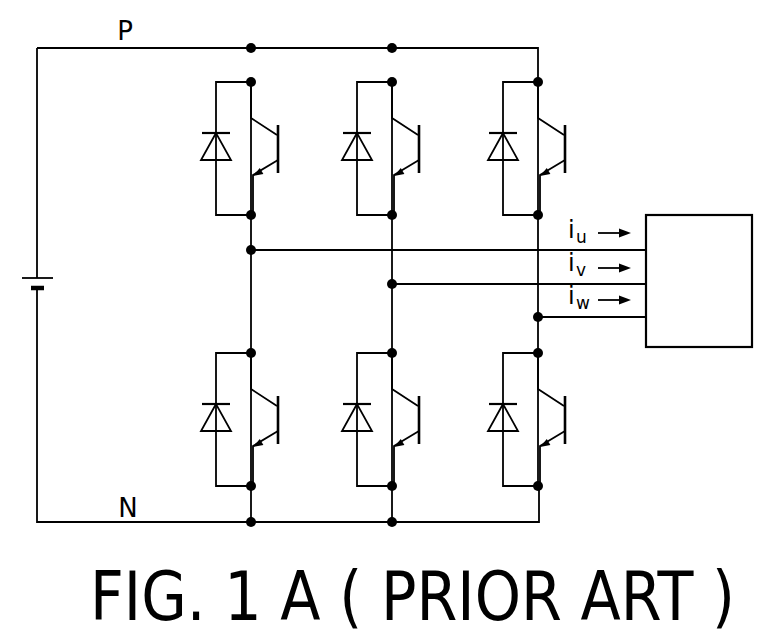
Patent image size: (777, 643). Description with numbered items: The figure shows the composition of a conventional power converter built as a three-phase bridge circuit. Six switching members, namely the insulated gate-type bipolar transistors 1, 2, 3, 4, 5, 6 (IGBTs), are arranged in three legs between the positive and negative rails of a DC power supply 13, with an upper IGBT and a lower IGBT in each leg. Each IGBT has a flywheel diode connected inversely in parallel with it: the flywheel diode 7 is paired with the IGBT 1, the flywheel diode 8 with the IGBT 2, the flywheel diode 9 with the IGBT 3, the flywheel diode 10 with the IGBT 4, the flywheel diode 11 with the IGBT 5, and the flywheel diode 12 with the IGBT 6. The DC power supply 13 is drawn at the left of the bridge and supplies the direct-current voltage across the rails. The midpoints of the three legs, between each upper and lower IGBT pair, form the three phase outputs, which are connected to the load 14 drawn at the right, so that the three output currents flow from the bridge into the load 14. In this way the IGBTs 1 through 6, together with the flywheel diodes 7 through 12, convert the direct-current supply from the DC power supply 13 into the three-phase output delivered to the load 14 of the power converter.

The insulated gate-type bipolar transistor 1 is at (283, 119).
The insulated gate-type bipolar transistor 2 is at (283, 390).
The insulated gate-type bipolar transistor 3 is at (419, 119).
The insulated gate-type bipolar transistor 4 is at (420, 388).
The insulated gate-type bipolar transistor 5 is at (564, 119).
The insulated gate-type bipolar transistor 6 is at (563, 390).
The flywheel diode 7 is at (195, 143).
The flywheel diode 8 is at (195, 415).
The flywheel diode 9 is at (348, 165).
The flywheel diode 10 is at (352, 442).
The flywheel diode 11 is at (497, 165).
The flywheel diode 12 is at (492, 440).
The DC power supply 13 is at (59, 279).
The load 14 is at (708, 214).